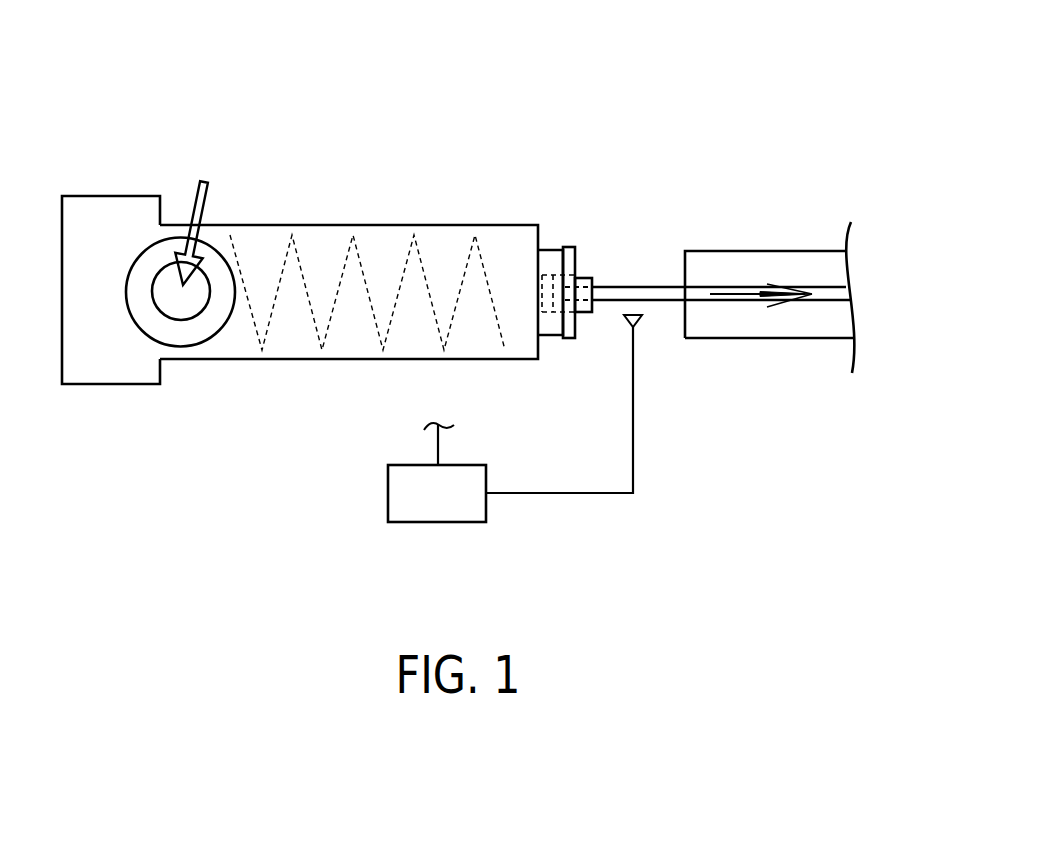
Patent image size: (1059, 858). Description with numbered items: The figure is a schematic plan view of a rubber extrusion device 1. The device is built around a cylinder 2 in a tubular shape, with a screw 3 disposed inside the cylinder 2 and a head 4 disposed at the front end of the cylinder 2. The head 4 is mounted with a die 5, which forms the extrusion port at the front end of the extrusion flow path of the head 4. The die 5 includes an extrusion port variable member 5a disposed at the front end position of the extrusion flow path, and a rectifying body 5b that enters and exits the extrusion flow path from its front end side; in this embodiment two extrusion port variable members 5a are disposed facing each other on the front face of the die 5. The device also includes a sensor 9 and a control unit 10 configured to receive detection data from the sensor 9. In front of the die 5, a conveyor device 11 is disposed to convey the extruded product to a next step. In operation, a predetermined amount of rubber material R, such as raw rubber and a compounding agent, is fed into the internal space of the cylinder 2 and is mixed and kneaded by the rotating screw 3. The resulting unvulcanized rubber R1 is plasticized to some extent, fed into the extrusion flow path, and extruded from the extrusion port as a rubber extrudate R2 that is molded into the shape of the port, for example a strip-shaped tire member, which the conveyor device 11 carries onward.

The rubber extrusion device 1 is at (458, 173).
The cylinder 2 is at (318, 235).
The screw 3 is at (268, 323).
The head 4 is at (550, 260).
The die 5 is at (607, 233).
The extrusion port variable member 5a is at (570, 263).
The rectifying body 5b is at (595, 284).
The sensor 9 is at (644, 318).
The control unit 10 is at (430, 512).
The conveyor device 11 is at (776, 333).
The rubber material R is at (197, 211).
The unvulcanized rubber R1 is at (388, 258).
The rubber extrudate R2 is at (705, 295).